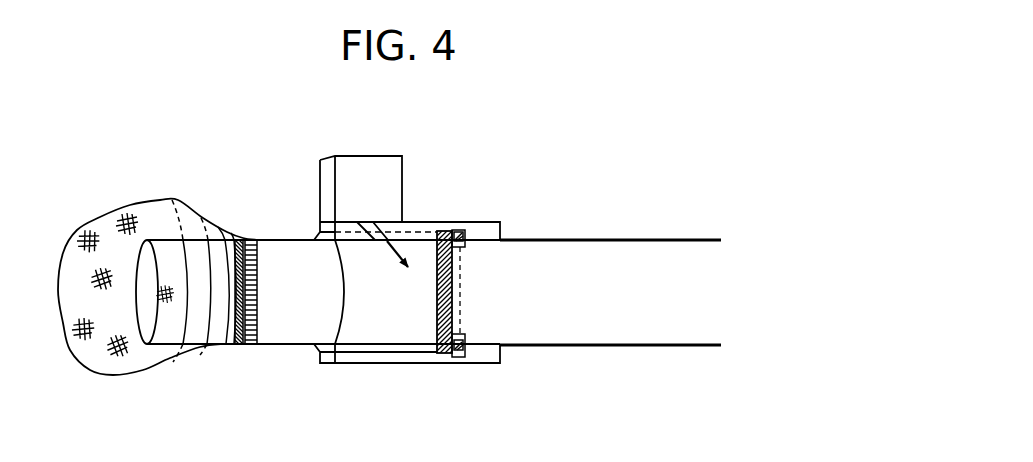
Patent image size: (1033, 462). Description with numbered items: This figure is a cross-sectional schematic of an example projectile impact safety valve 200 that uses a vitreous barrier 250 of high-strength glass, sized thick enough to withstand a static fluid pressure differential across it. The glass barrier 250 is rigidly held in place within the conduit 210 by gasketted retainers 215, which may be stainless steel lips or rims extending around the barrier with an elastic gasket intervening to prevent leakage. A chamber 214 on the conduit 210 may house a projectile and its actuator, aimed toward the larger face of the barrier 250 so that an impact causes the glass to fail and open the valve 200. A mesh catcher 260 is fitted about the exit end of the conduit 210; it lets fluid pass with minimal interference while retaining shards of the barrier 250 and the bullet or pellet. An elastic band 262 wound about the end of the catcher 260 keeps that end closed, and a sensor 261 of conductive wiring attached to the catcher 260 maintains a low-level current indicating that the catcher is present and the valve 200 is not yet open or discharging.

The projectile impact safety valve 200 is at (590, 392).
The conduit 210 is at (590, 240).
The chamber 214 is at (367, 220).
The gasketted retainers 215 is at (470, 340).
The vitreous barrier 250 is at (437, 224).
The mesh catcher 260 is at (135, 383).
The sensor 261 is at (254, 352).
The elastic band 262 is at (199, 363).